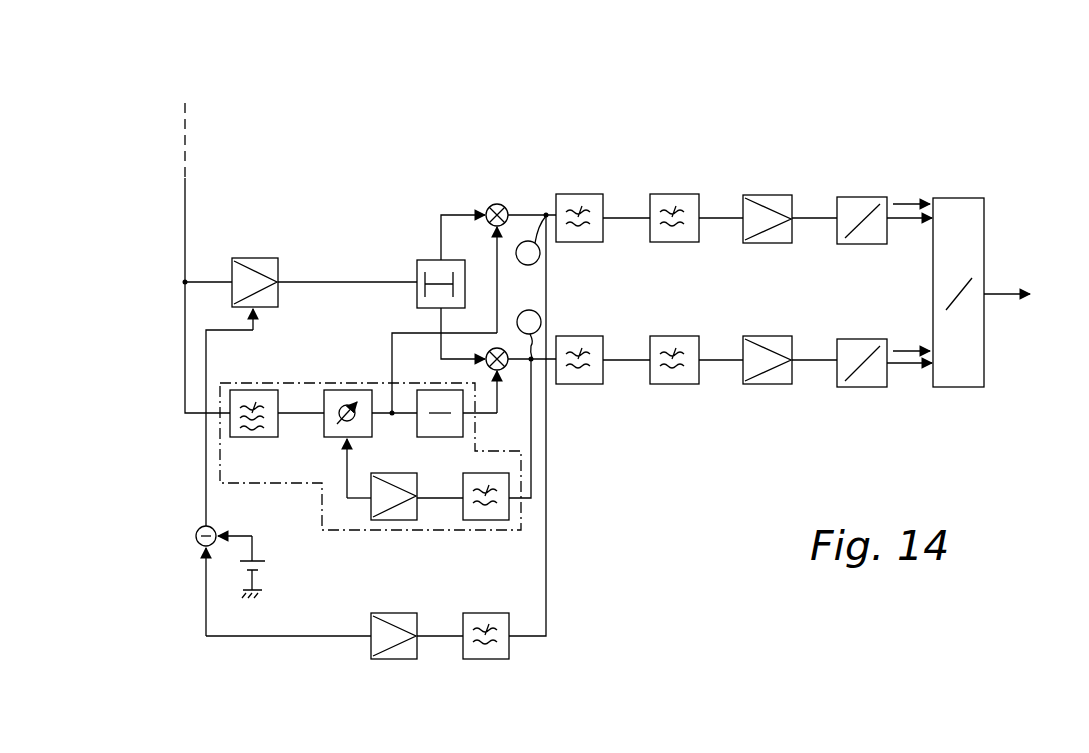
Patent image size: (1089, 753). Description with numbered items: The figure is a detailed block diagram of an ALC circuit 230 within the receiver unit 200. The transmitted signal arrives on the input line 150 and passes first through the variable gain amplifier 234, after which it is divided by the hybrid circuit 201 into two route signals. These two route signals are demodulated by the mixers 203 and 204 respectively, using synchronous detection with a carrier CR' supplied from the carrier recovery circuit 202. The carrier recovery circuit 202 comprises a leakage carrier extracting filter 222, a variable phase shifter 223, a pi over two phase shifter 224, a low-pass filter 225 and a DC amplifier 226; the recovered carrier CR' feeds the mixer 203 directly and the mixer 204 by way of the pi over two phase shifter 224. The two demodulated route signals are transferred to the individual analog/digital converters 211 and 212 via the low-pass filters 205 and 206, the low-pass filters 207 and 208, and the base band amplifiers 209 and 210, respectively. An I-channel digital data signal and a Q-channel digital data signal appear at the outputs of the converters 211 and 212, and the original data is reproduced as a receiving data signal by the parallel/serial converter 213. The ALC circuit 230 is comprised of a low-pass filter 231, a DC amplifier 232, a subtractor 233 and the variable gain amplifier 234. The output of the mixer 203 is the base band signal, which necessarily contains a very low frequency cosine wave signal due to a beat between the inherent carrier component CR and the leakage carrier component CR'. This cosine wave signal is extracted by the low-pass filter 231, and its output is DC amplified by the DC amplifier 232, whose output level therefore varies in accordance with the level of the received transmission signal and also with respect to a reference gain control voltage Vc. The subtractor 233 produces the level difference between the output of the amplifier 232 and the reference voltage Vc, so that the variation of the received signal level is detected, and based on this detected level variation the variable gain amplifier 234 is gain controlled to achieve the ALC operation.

The input signal line 150 is at (186, 205).
The receiver unit 200 is at (654, 135).
The hybrid circuit 201 is at (417, 259).
The carrier recovery circuit 202 is at (340, 531).
The mixer 203 is at (497, 204).
The mixer 204 is at (505, 367).
The low-pass filter 205 is at (580, 193).
The low-pass filter 206 is at (580, 384).
The low-pass filter 207 is at (681, 194).
The low-pass filter 208 is at (680, 384).
The base band amplifier 209 is at (771, 194).
The base band amplifier 210 is at (770, 384).
The analog/digital converter 211 is at (863, 194).
The analog/digital converter 212 is at (862, 387).
The parallel/serial converter 213 is at (965, 195).
The leakage carrier extracting filter 222 is at (256, 390).
The variable phase shifter 223 is at (351, 390).
The pi/2 phase shifter 224 is at (443, 437).
The low-pass filter 225 is at (486, 520).
The DC amplifier 226 is at (400, 520).
The ALC circuit 230 is at (347, 658).
The low-pass filter 231 is at (488, 659).
The DC amplifier 232 is at (395, 659).
The subtractor 233 is at (214, 528).
The variable gain amplifier 234 is at (259, 258).